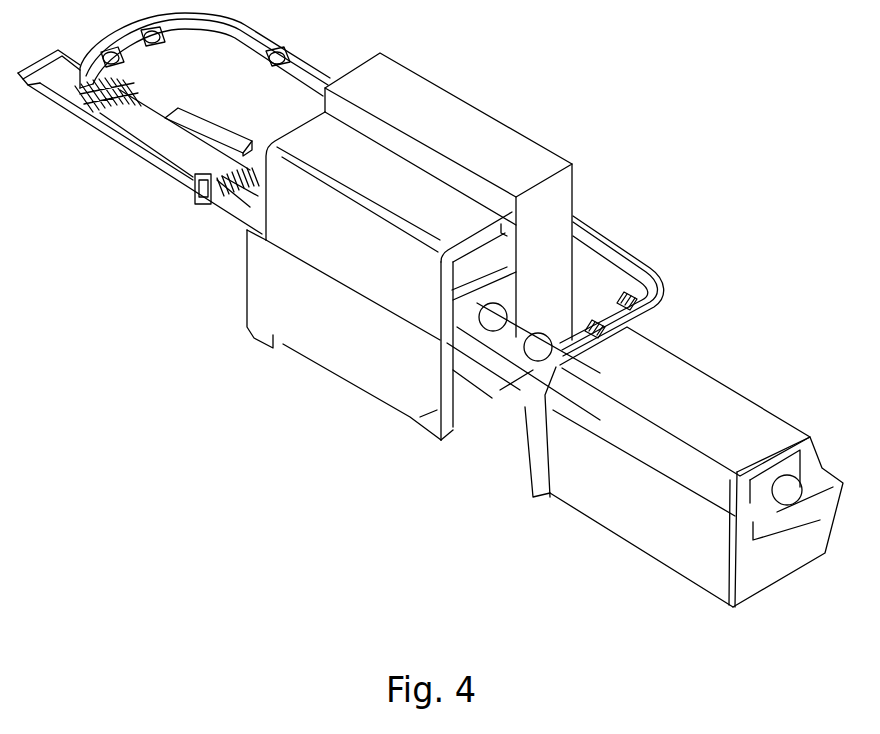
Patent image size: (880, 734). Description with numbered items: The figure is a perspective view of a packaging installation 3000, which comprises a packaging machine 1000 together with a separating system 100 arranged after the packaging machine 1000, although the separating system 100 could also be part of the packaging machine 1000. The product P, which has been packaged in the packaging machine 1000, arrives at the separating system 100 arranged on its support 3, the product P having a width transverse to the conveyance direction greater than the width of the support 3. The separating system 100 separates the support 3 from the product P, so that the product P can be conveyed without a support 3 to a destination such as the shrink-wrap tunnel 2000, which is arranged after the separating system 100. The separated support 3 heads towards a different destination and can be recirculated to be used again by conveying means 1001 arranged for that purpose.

The packaging machine 1000 is at (205, 345).
The shrink-wrap tunnel 2000 is at (613, 556).
The packaging installation 3000 is at (658, 91).
The conveying means 1001 is at (610, 252).
The support 3 is at (640, 306).
The product P is at (552, 358).
The separating system 100 is at (493, 405).